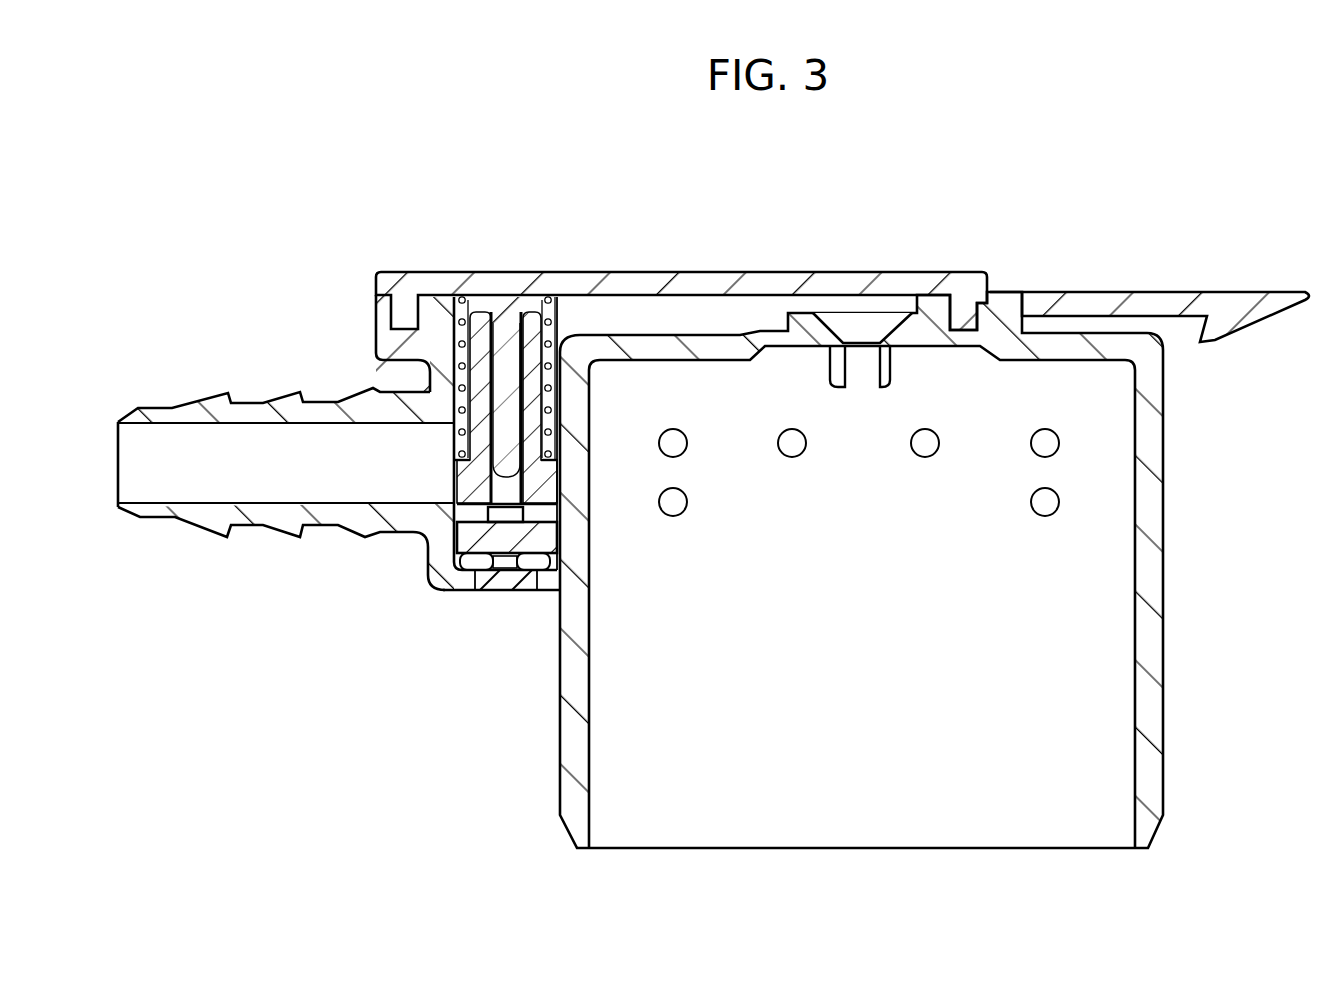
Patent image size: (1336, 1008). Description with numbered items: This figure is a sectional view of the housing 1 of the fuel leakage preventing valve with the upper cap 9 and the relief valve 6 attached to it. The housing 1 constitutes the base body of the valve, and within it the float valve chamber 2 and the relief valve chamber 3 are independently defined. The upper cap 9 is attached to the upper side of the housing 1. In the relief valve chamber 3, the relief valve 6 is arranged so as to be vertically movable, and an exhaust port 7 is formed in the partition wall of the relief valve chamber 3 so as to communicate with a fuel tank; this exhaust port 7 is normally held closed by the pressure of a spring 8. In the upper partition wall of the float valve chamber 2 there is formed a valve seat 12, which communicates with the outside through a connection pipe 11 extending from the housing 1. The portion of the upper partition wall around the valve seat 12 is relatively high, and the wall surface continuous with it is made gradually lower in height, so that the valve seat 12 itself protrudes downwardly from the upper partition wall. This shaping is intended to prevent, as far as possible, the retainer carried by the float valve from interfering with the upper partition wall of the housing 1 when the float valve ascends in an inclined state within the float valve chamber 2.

The housing 1 is at (1160, 446).
The float valve chamber 2 is at (990, 400).
The relief valve chamber 3 is at (464, 300).
The relief valve 6 is at (460, 541).
The exhaust port 7 is at (487, 572).
The spring 8 is at (552, 300).
The upper cap 9 is at (705, 272).
The connection pipe 11 is at (226, 395).
The valve seat 12 is at (863, 372).